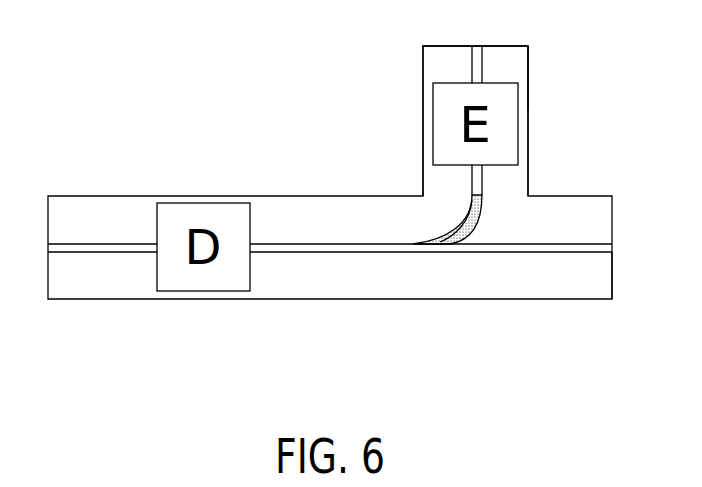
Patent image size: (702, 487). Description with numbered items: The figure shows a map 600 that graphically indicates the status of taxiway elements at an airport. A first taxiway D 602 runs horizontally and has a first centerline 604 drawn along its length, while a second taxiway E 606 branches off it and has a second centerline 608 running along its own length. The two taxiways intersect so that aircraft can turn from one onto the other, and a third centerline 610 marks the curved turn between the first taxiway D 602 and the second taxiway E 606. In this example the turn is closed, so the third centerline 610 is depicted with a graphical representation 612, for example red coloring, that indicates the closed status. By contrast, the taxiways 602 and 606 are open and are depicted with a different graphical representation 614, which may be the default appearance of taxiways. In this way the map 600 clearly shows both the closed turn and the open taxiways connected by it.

The map 600 is at (84, 44).
The first taxiway "D" 602 is at (272, 300).
The first centerline 604 is at (348, 253).
The second taxiway "E" 606 is at (423, 132).
The second centerline 608 is at (472, 63).
The third centerline 610 is at (465, 210).
The graphical representation 612 is at (473, 230).
The graphical representation 614 is at (504, 65).